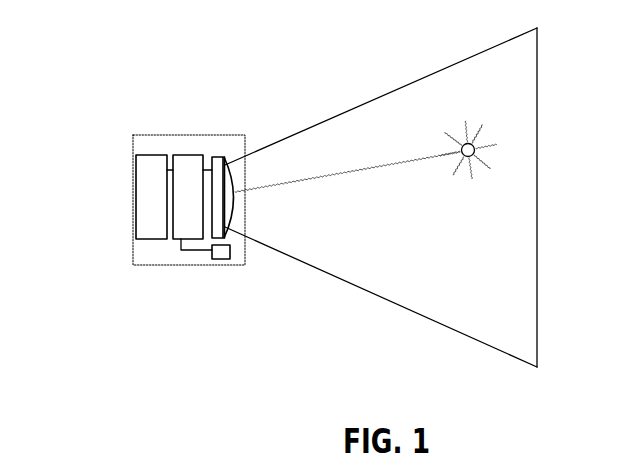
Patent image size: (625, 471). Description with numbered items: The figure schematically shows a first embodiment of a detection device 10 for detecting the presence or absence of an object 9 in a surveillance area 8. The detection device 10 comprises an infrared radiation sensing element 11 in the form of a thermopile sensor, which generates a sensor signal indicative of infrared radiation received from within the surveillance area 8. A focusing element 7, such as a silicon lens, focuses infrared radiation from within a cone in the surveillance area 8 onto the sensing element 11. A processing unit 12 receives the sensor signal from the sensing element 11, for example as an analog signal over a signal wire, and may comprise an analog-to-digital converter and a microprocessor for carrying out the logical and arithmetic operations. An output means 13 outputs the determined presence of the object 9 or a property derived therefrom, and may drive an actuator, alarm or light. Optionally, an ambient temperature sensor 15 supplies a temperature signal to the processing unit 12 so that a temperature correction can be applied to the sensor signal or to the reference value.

The focusing element 7 is at (233, 220).
The surveillance area 8 is at (551, 297).
The object 9 is at (474, 146).
The detection device 10 is at (178, 100).
The infrared radiation sensing element 11 is at (217, 155).
The processing unit 12 is at (183, 155).
The output means 13 is at (152, 239).
The ambient temperature sensor 15 is at (215, 259).